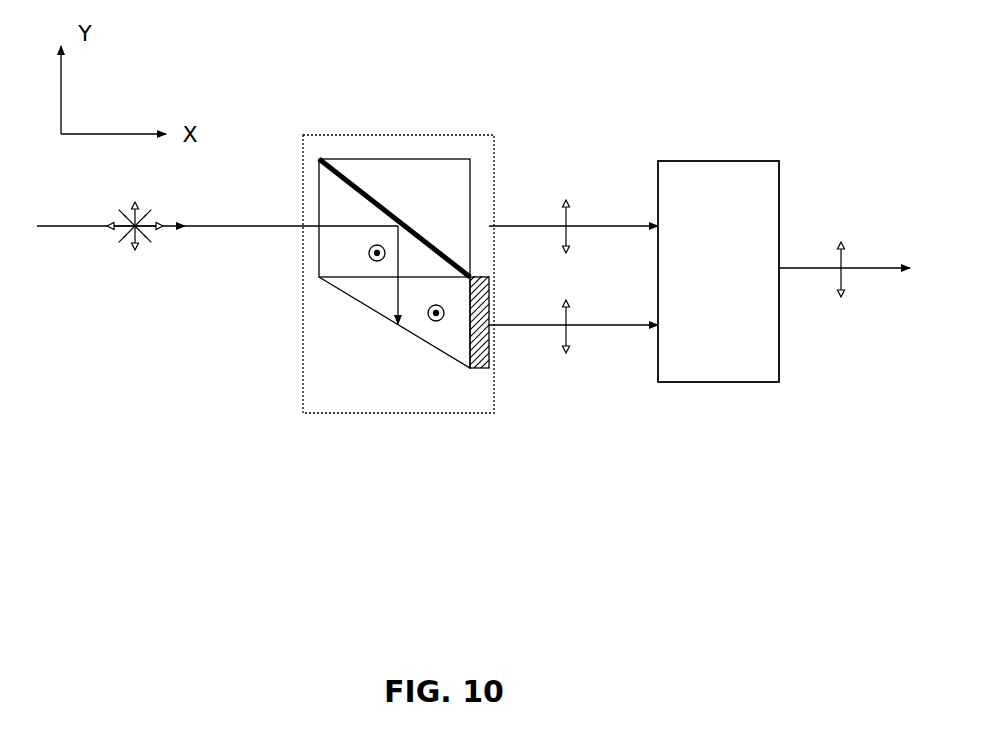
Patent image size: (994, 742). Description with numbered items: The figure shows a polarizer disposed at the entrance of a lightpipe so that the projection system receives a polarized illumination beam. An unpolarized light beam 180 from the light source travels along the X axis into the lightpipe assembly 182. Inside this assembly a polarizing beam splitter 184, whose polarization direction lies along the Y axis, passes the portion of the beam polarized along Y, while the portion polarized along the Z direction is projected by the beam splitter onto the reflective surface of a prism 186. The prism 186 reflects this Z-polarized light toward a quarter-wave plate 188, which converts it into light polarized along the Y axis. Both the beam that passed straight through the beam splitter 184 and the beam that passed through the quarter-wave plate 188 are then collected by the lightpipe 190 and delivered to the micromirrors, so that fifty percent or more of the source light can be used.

The light beam 180 is at (78, 228).
The lightpipe assembly 182 is at (481, 133).
The polarizing beam splitter 184 is at (353, 180).
The prism 186 is at (378, 315).
The λ/4 plate 188 is at (492, 298).
The lightpipe 190 is at (712, 160).